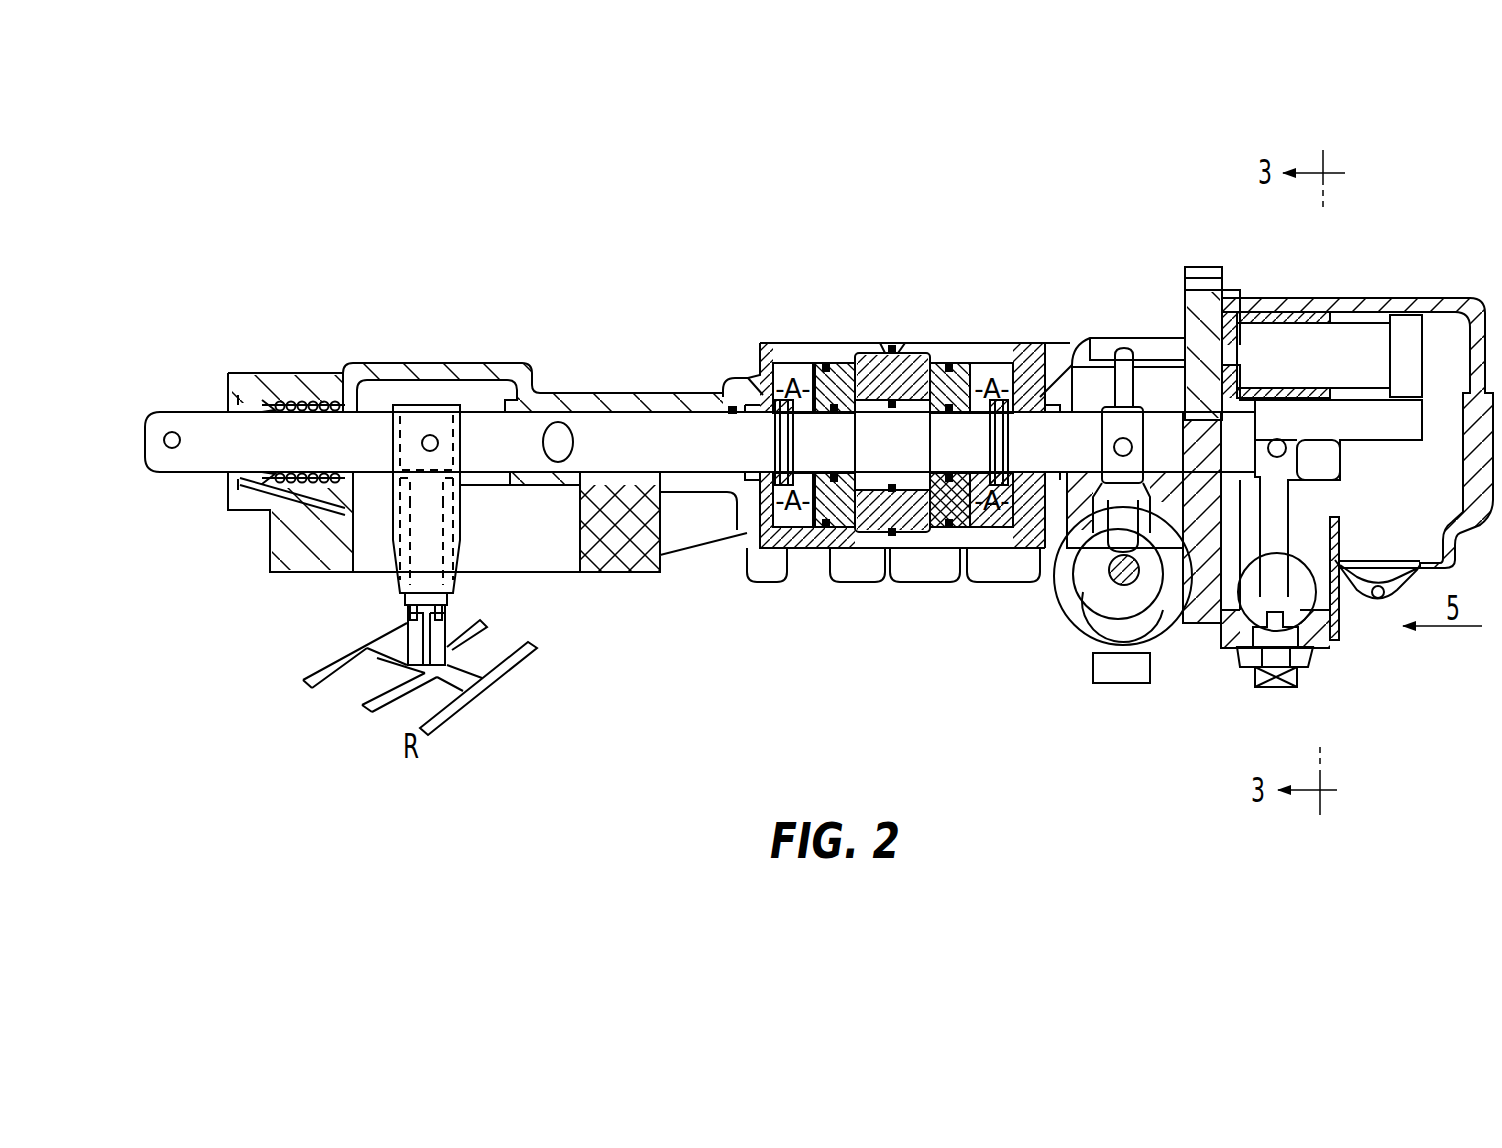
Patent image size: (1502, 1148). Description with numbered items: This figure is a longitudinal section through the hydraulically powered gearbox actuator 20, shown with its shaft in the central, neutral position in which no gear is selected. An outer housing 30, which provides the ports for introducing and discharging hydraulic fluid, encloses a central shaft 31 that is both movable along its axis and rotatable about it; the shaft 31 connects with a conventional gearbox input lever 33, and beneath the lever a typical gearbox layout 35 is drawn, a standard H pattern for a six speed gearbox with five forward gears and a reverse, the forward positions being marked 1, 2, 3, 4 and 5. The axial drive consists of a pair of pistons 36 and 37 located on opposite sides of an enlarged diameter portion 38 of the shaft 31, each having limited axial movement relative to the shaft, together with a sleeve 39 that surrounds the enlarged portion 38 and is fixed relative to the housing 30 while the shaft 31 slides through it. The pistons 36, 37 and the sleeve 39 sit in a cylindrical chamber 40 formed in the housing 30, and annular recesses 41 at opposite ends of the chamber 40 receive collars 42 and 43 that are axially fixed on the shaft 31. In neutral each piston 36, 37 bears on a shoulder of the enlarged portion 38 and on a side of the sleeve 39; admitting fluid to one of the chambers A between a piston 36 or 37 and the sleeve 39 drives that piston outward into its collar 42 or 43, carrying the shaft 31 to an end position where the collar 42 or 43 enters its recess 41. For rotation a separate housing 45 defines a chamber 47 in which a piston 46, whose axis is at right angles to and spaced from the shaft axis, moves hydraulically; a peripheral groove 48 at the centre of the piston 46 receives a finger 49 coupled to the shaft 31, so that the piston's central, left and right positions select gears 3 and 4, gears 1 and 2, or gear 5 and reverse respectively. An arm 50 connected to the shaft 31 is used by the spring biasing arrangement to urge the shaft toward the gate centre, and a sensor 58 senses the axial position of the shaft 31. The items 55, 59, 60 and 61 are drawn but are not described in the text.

The first gear position 1 is at (418, 535).
The second gear position 2 is at (299, 695).
The third gear position 3 is at (487, 610).
The fourth gear position 4 is at (359, 718).
The fifth gear position 5 is at (537, 630).
The actuator 20 is at (492, 272).
The outer housing 30 is at (676, 576).
The central shaft 31 is at (632, 428).
The gearbox input lever 33 is at (365, 574).
The gearbox layout 35 is at (475, 714).
The piston 36 is at (826, 382).
The piston 37 is at (945, 372).
The enlarged diameter portion 38 is at (892, 440).
The sleeve 39 is at (868, 345).
The cylindrical chamber 40 is at (803, 548).
The annular recesses 41 is at (752, 380).
The collar 42 is at (757, 352).
The collar 43 is at (1013, 372).
The housing 45 is at (1092, 600).
The piston 46 is at (1087, 654).
The chamber 47 is at (1060, 597).
The peripheral groove 48 is at (1097, 483).
The finger 49 is at (1150, 605).
The arm 50 is at (1335, 612).
The nut 55 is at (1335, 640).
The sensor 58 is at (1342, 298).
The body 59 is at (1117, 363).
The flange 60 is at (1152, 365).
The solenoid coil 61 is at (1298, 343).